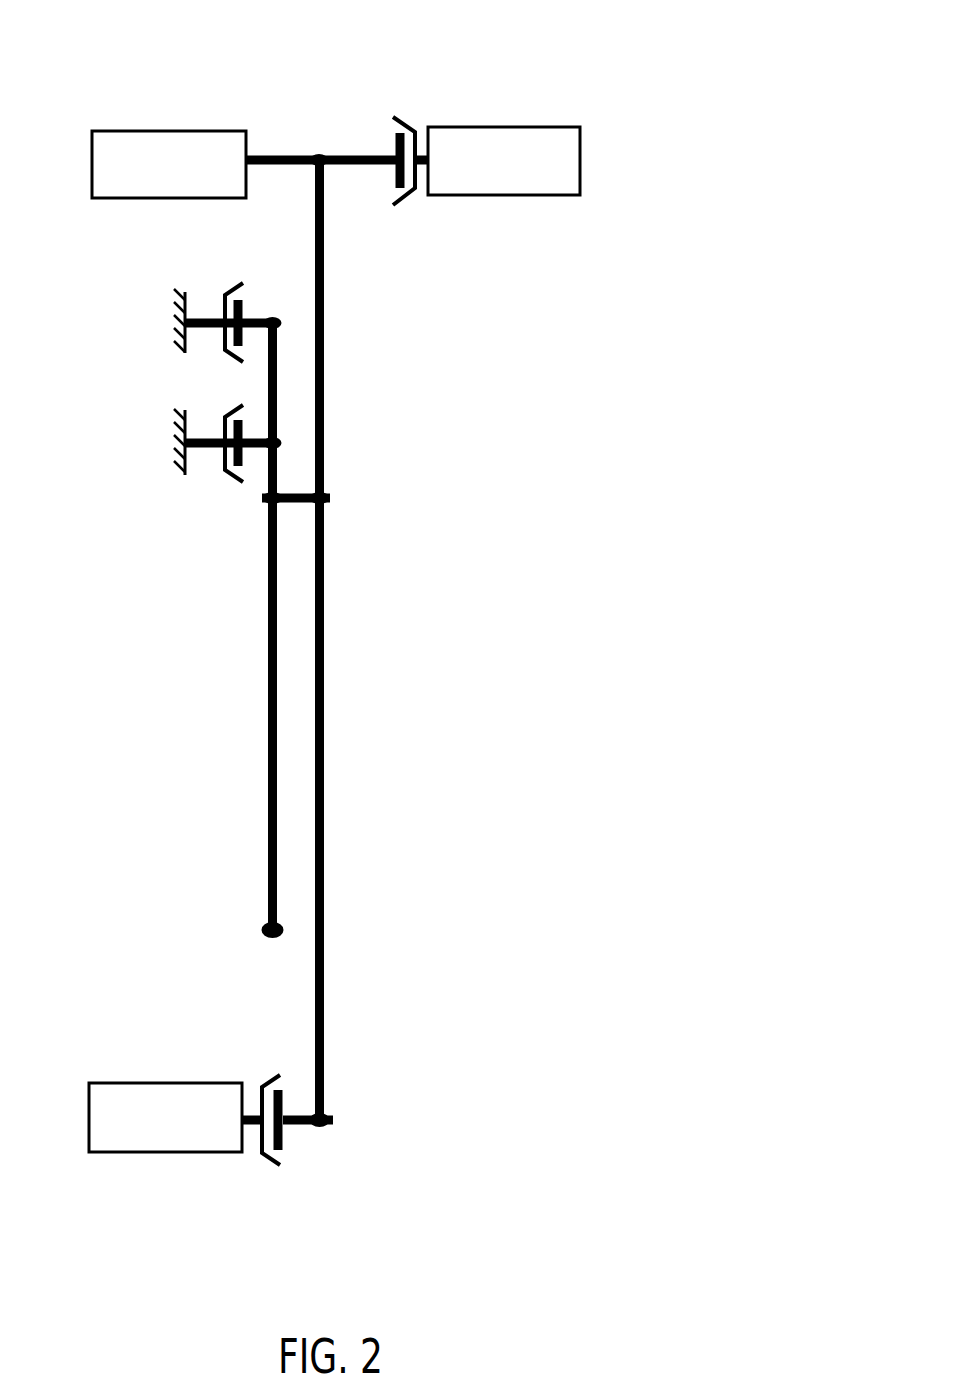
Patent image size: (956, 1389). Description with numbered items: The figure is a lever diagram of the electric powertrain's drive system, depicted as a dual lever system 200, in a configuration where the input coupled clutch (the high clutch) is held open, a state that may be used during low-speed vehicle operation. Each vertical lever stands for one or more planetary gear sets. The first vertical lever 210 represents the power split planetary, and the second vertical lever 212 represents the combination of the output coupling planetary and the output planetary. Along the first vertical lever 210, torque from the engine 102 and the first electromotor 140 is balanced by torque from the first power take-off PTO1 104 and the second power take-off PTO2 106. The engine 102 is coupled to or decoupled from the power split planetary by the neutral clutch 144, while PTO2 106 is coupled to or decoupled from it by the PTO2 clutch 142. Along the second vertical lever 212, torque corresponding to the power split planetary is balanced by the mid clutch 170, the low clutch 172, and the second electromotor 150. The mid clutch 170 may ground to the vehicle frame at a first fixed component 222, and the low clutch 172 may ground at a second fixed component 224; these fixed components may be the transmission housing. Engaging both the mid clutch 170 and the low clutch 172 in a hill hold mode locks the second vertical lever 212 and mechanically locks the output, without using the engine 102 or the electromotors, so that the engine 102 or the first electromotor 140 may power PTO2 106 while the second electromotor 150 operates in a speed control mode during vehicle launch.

The dual lever system 200 is at (613, 32).
The engine 102 is at (483, 127).
The first power take-off (PTO1) 104 is at (152, 131).
The second power take-off (PTO2) 106 is at (152, 1083).
The first electromotor 140 is at (405, 1080).
The PTO2 clutch 142 is at (278, 1195).
The neutral clutch 144 is at (405, 100).
The second electromotor 150 is at (190, 898).
The mid clutch 170 is at (235, 258).
The low clutch 172 is at (237, 508).
The first vertical lever 210 is at (321, 665).
The second vertical lever 212 is at (272, 718).
The first fixed component 222 is at (150, 318).
The second fixed component 224 is at (150, 468).